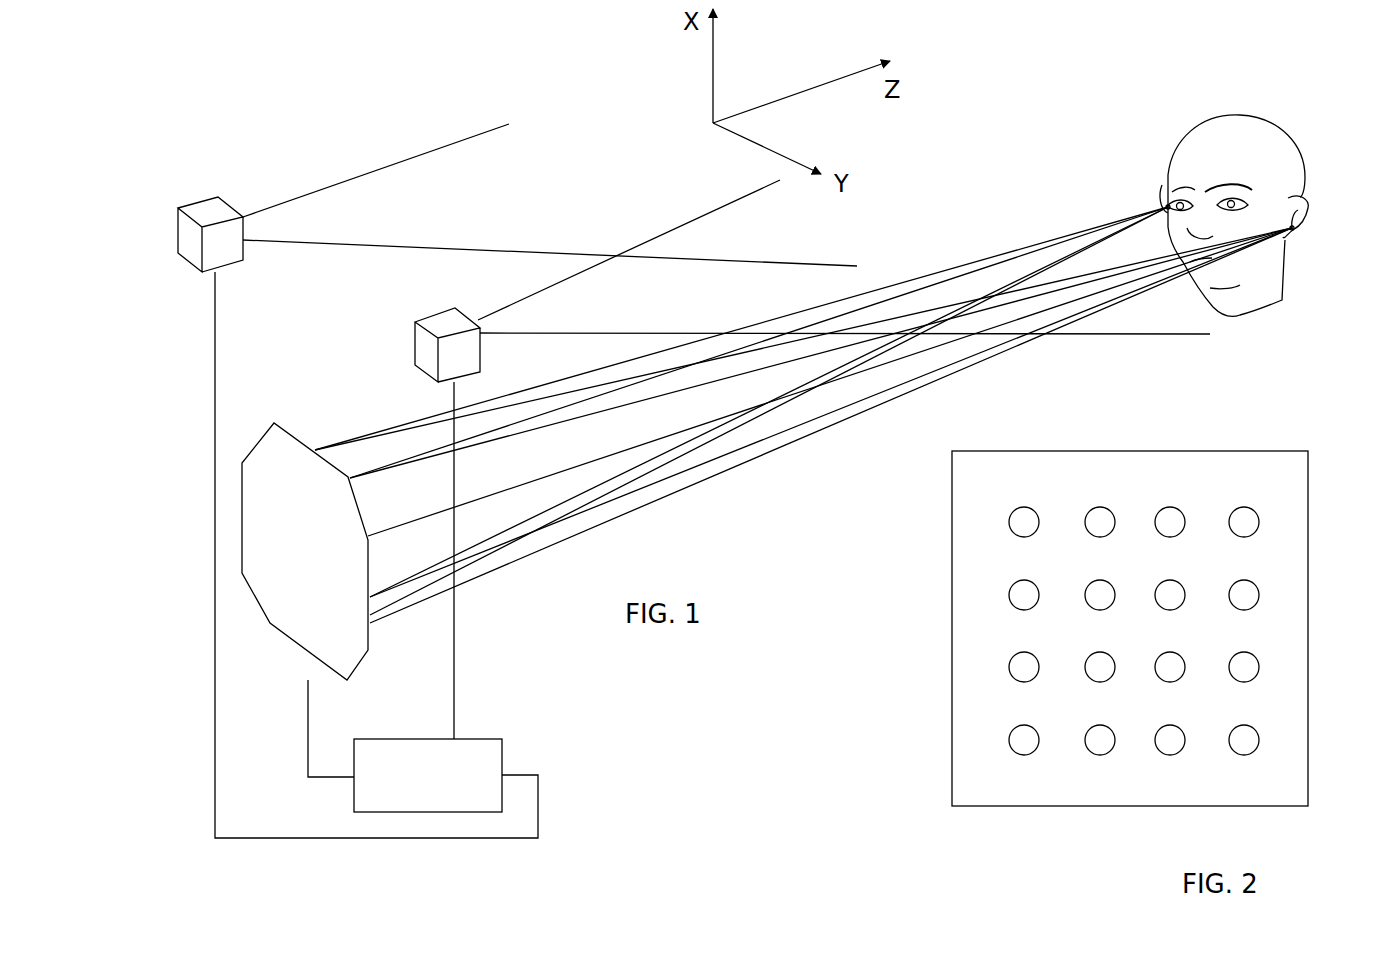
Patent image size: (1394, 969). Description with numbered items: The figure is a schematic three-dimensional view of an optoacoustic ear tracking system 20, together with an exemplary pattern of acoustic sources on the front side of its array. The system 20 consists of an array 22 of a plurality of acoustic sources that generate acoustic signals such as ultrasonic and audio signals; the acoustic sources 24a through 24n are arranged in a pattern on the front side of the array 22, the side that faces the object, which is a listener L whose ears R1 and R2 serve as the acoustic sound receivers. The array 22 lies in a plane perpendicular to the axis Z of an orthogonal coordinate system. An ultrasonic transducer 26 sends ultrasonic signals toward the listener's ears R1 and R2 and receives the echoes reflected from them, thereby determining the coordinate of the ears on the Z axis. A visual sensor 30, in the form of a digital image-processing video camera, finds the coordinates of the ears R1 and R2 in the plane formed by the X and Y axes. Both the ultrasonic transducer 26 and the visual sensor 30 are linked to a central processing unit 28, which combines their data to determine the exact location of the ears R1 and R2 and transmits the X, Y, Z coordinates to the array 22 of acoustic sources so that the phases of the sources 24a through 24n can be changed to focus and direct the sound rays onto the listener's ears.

In FIG. 1, the optoacoustic ear tracking system 20 is at (982, 161).
In FIG. 1, the array of acoustic sources 22 is at (303, 436).
In FIG. 2, the acoustic source 24a is at (1023, 518).
In FIG. 2, the acoustic source 24n is at (1093, 508).
In FIG. 1, the ultrasonic transducer 26 is at (205, 212).
In FIG. 1, the central processing unit 28 is at (384, 555).
In FIG. 1, the visual sensor 30 is at (422, 347).
In FIG. 1, the listener L is at (1249, 134).
In FIG. 1, the listener's ear R1 is at (1166, 197).
In FIG. 1, the listener's ear R2 is at (1303, 213).